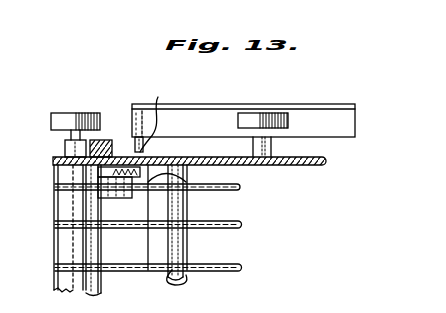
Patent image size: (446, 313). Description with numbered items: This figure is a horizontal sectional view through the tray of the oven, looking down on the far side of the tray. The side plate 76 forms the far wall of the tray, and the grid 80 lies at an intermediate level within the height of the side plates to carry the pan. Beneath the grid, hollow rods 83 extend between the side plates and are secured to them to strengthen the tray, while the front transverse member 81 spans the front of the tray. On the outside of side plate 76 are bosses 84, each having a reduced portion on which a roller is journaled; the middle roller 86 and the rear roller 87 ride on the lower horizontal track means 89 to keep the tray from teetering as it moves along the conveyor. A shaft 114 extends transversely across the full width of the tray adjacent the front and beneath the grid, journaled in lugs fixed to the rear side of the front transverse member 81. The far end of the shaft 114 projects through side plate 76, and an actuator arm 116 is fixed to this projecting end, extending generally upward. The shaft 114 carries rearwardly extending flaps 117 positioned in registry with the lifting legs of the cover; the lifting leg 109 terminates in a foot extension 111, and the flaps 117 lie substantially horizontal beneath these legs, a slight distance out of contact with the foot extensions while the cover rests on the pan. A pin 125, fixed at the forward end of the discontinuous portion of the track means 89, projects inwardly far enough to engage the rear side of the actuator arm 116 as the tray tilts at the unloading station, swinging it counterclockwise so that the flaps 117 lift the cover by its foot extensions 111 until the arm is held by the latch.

The side plate 76 is at (312, 166).
The grid 80 is at (240, 265).
The front transverse member 81 is at (77, 247).
The hollow rods 83 is at (183, 283).
The bosses 84 is at (272, 148).
The middle roller 86 is at (278, 113).
The rear roller 87 is at (67, 114).
The lower horizontal track means 89 is at (348, 125).
The lifting leg 109 is at (148, 158).
The foot extensions 111 is at (137, 176).
The shaft 114 is at (100, 282).
The actuator arm 116 is at (104, 145).
The flaps 117 is at (112, 198).
The pin 125 is at (161, 118).